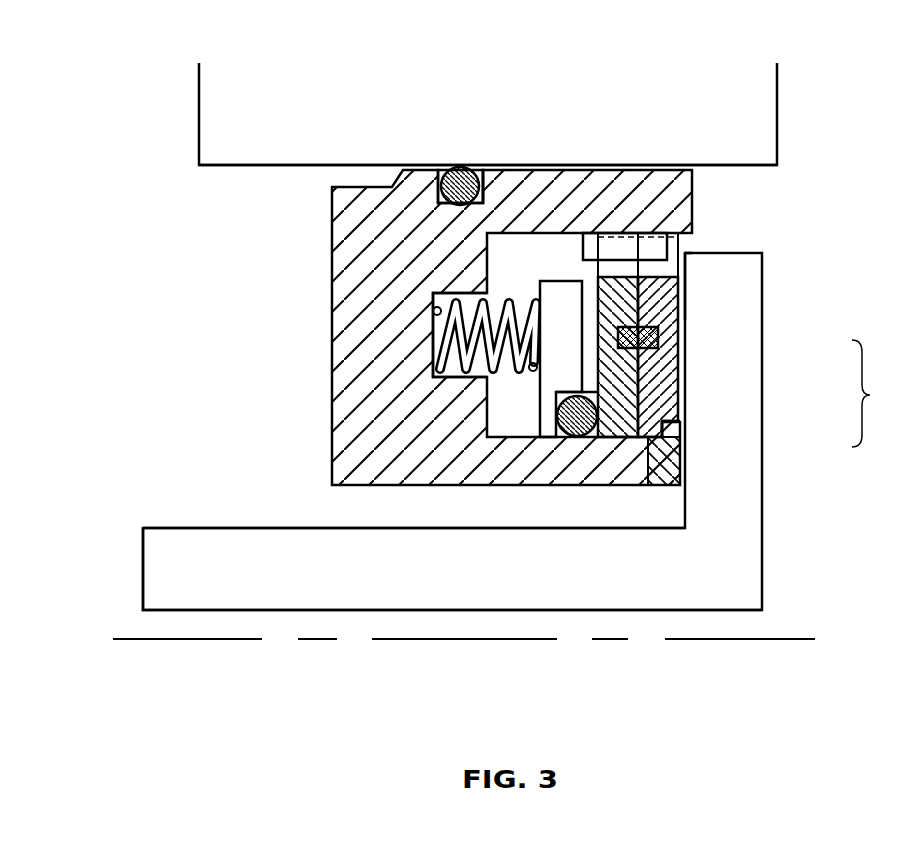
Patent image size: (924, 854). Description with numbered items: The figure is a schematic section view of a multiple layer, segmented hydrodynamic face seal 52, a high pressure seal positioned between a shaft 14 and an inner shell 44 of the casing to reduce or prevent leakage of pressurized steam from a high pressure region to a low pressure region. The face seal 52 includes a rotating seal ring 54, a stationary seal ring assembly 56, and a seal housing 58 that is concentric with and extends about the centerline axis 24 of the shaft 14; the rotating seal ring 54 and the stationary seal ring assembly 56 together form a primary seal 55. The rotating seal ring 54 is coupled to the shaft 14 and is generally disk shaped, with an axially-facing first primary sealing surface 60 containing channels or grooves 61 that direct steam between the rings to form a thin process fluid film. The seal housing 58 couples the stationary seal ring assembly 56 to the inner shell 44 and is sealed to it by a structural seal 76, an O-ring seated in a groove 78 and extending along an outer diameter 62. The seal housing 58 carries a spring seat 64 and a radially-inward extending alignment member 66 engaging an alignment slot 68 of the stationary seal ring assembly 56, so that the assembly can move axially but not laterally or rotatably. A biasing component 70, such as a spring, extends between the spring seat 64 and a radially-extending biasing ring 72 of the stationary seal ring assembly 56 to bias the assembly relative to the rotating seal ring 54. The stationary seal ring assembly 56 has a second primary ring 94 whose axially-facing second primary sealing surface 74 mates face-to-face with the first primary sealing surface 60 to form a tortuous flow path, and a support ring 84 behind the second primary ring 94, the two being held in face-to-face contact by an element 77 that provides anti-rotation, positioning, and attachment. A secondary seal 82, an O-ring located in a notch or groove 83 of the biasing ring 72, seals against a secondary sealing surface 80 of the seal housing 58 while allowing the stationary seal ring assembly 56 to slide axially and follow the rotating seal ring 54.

The shaft 14 is at (162, 555).
The centerline axis 24 is at (133, 641).
The inner shell 44 is at (213, 167).
The face seal 52 is at (258, 90).
The rotating seal ring 54 is at (738, 365).
The primary seal 55 is at (875, 393).
The stationary seal ring assembly 56 is at (678, 414).
The seal housing 58 is at (332, 365).
The first primary sealing surface 60 is at (683, 243).
The channels or grooves 61 is at (685, 335).
The outer diameter 62 is at (437, 165).
The spring seat 64 is at (436, 289).
The alignment member 66 is at (678, 264).
The alignment slot 68 is at (614, 270).
The biasing component 70 is at (437, 333).
The biasing ring 72 is at (561, 281).
The second primary sealing surface 74 is at (685, 308).
The structural seal 76 is at (459, 165).
The element 77 is at (685, 283).
The groove 78 is at (490, 165).
The secondary sealing surface 80 is at (525, 437).
The secondary seal 82 is at (577, 440).
The notch or groove 83 is at (628, 440).
The support ring 84 is at (684, 467).
The second primary ring 94 is at (683, 442).